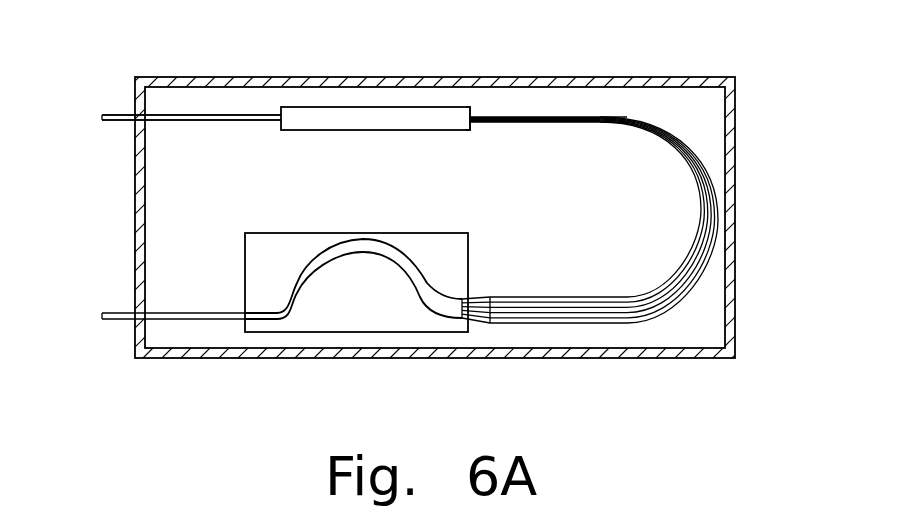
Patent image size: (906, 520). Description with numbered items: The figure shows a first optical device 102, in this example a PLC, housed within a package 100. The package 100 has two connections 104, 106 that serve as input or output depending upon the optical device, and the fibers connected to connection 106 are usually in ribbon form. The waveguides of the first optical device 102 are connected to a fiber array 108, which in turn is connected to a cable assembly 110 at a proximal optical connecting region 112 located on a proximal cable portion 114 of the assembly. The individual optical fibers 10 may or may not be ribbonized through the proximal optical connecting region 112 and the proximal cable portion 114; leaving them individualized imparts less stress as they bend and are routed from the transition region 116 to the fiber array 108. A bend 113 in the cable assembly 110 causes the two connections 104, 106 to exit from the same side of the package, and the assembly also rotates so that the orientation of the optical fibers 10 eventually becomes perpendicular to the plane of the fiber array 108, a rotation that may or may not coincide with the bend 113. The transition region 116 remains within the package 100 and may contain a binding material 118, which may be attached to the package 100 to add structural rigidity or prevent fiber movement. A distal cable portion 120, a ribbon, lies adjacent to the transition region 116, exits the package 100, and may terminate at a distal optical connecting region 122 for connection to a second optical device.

The optical fibers 10 is at (635, 324).
The package 100 is at (260, 77).
The first optical device 102 is at (313, 332).
The connection 104 is at (127, 308).
The connection 106 is at (128, 122).
The fiber array 108 is at (460, 312).
The cable assembly 110 is at (687, 129).
The proximal optical connecting region 112 is at (481, 326).
The bend 113 is at (690, 291).
The proximal cable portion 114 is at (590, 114).
The transition region 116 is at (438, 108).
The binding material 118 is at (357, 106).
The distal cable portion 120 is at (190, 114).
The distal optical connecting region 122 is at (110, 114).